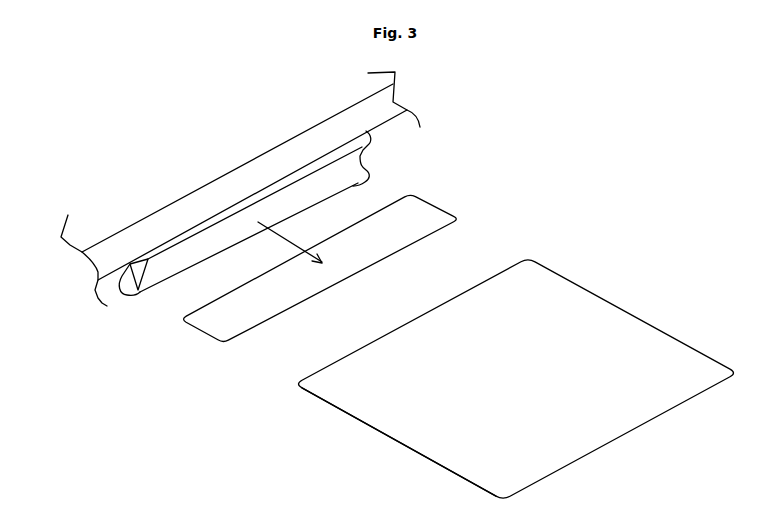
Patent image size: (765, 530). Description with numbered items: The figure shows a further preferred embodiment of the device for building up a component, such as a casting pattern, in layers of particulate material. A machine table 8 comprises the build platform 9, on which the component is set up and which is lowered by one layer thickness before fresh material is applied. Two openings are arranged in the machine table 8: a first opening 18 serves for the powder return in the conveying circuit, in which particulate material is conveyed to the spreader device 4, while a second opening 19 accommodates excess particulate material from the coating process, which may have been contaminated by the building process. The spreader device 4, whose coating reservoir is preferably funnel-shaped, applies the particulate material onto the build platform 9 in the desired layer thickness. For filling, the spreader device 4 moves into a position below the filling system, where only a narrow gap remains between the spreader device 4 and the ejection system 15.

The ejection system 15 is at (257, 170).
The spreader device 4 is at (347, 162).
The first opening 18 is at (337, 190).
The second opening 19 is at (388, 223).
The build platform 9 is at (533, 360).
The machine table 8 is at (308, 413).